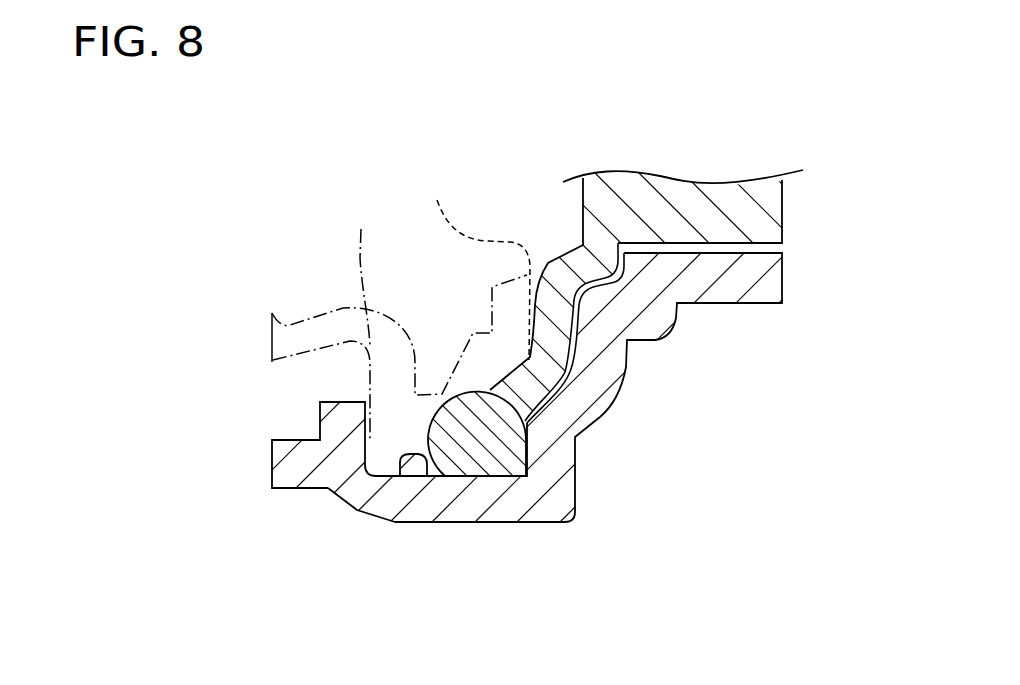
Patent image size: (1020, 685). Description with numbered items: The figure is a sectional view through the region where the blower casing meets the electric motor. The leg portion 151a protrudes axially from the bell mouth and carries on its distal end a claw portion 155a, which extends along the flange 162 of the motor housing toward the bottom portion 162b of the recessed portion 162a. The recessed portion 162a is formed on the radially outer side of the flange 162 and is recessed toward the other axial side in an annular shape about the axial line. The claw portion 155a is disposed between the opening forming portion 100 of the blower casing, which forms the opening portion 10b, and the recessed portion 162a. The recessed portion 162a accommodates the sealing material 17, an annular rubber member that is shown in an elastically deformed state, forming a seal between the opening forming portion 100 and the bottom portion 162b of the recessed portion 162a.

The opening forming portion 100 is at (399, 321).
The opening portion 10b is at (472, 266).
The leg portion 151a is at (677, 195).
The claw portion 155a is at (547, 266).
The flange 162 is at (701, 304).
The recessed portion 162a is at (362, 512).
The bottom portion 162b is at (423, 478).
The sealing material 17 is at (492, 440).